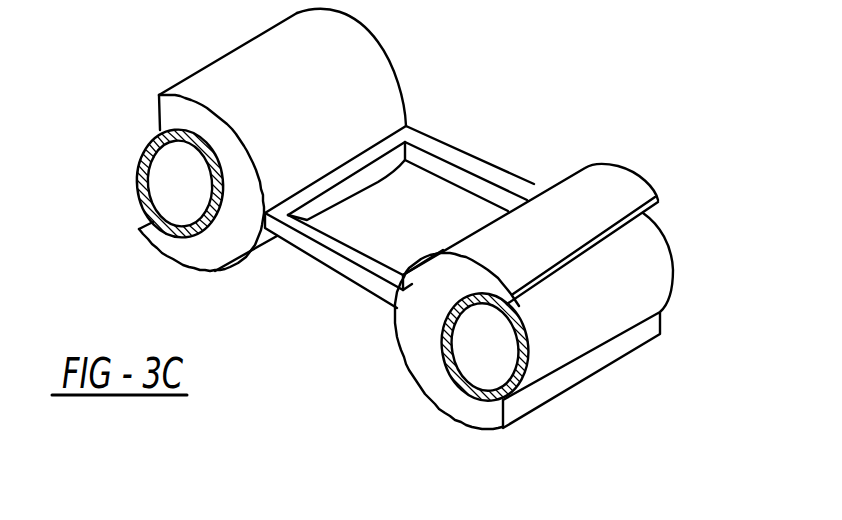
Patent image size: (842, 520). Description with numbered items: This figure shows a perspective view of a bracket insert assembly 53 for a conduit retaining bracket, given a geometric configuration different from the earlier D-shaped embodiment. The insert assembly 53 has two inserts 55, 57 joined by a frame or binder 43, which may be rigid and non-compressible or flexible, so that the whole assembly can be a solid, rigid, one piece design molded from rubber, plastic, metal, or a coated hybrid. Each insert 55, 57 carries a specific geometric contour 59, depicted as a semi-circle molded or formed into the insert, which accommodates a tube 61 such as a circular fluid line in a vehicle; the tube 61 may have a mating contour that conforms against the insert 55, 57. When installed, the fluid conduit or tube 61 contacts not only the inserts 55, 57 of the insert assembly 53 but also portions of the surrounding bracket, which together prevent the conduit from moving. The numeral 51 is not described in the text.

The frame or binder 43 is at (492, 163).
The first cylindrical body 51 is at (228, 0).
The bracket insert assembly 53 is at (492, 94).
The insert 55 is at (613, 167).
The insert 57 is at (385, 53).
The geometric contour 59 is at (198, 229).
The tube 61 is at (143, 146).